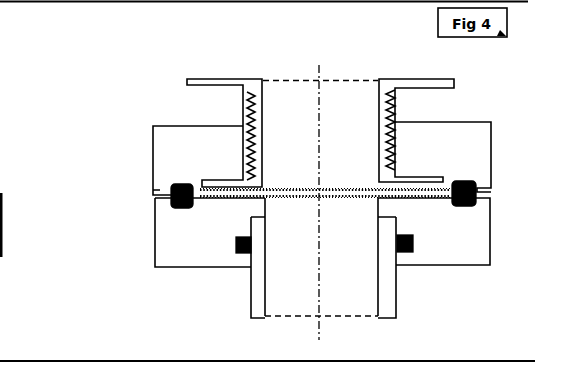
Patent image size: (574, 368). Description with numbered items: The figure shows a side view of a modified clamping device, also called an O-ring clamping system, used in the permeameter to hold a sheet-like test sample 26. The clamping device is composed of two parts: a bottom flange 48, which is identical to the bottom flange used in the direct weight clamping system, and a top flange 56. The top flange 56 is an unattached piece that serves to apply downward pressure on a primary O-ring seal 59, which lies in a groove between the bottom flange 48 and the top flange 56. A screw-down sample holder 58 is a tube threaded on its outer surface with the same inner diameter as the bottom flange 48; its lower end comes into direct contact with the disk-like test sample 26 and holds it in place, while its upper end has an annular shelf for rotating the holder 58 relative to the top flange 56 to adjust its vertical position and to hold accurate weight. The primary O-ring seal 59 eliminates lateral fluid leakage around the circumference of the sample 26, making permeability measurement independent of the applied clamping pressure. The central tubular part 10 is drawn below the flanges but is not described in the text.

The screw-down sample holder 58 is at (195, 78).
The top flange 56 is at (195, 140).
The primary O-ring seal 59 is at (172, 190).
The bottom flange 48 is at (162, 222).
The test sample 26 is at (272, 192).
The tube 10 is at (258, 295).